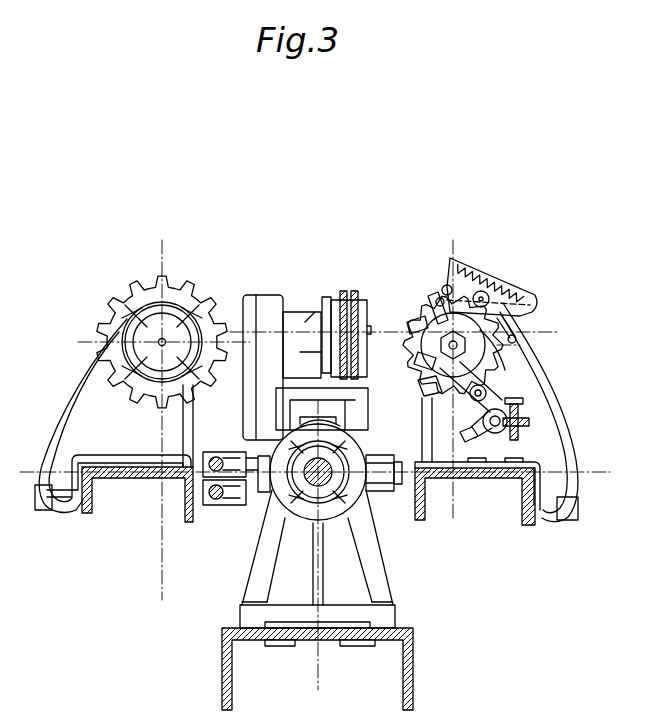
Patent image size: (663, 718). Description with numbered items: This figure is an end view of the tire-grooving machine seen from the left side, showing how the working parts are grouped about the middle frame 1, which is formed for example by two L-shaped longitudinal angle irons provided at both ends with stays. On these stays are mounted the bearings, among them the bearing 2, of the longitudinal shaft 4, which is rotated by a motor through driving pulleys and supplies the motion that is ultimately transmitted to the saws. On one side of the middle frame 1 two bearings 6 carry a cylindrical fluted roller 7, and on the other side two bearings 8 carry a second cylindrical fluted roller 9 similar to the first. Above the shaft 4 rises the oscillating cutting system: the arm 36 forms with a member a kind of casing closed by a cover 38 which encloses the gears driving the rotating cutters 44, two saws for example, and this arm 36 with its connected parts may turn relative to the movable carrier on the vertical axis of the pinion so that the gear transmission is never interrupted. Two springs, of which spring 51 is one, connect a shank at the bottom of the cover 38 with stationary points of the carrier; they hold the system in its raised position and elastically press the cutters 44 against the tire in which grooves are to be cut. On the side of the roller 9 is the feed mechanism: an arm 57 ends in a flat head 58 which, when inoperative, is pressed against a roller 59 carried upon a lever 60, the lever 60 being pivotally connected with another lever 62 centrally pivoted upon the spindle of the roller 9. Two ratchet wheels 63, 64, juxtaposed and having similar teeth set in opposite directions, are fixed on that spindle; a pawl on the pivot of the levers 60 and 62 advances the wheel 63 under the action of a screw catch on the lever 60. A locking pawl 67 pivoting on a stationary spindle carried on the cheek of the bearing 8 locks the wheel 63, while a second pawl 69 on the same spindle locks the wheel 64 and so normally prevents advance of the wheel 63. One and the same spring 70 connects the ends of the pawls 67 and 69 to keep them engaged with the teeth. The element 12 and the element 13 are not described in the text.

The middle frame 1 is at (270, 640).
The bearing 2 is at (317, 559).
The longitudinal shaft 4 is at (316, 486).
The bearing 6 is at (114, 420).
The cylindrical fluted roller 7 is at (184, 292).
The bearing 8 is at (550, 398).
The second cylindrical fluted roller 9 is at (440, 297).
The ratchet wheel 12 is at (420, 306).
The housing 13 is at (300, 412).
The arm 36 is at (300, 365).
The cover 38 is at (243, 300).
The rotating cutters 44 is at (355, 292).
The spring 51 is at (220, 456).
The arm 57 is at (528, 426).
The flat head 58 is at (526, 416).
The roller 59 is at (500, 436).
The lever 60 is at (535, 383).
The lever 62 is at (488, 374).
The ratchet wheel 63 is at (414, 386).
The ratchet wheel 64 is at (412, 360).
The locking pawl 67 is at (512, 330).
The second pawl 69 is at (522, 308).
The spring 70 is at (484, 282).